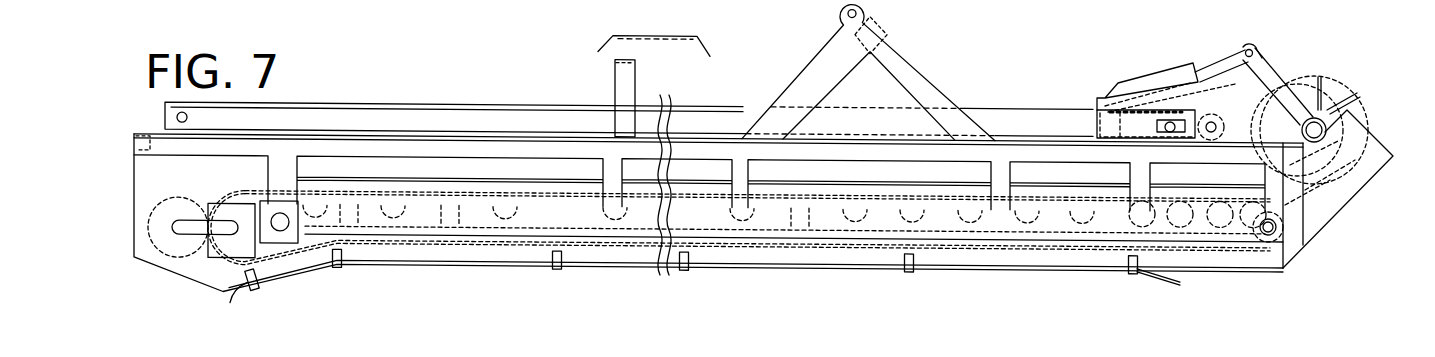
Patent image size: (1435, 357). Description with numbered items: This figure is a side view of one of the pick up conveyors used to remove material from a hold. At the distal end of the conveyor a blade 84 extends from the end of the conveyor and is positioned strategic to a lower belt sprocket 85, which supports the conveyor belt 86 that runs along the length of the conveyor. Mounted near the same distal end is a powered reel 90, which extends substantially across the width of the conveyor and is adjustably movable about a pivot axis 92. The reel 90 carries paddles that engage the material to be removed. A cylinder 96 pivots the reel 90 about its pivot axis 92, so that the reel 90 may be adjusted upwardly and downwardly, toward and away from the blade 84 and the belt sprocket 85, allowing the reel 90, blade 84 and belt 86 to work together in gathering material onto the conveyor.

The blade 84 is at (1330, 215).
The lower belt sprocket 85 is at (1276, 232).
The conveyor belt 86 is at (535, 193).
The powered reel 90 is at (1319, 77).
The pivot axis 92 is at (1212, 122).
The cylinder 96 is at (1150, 77).